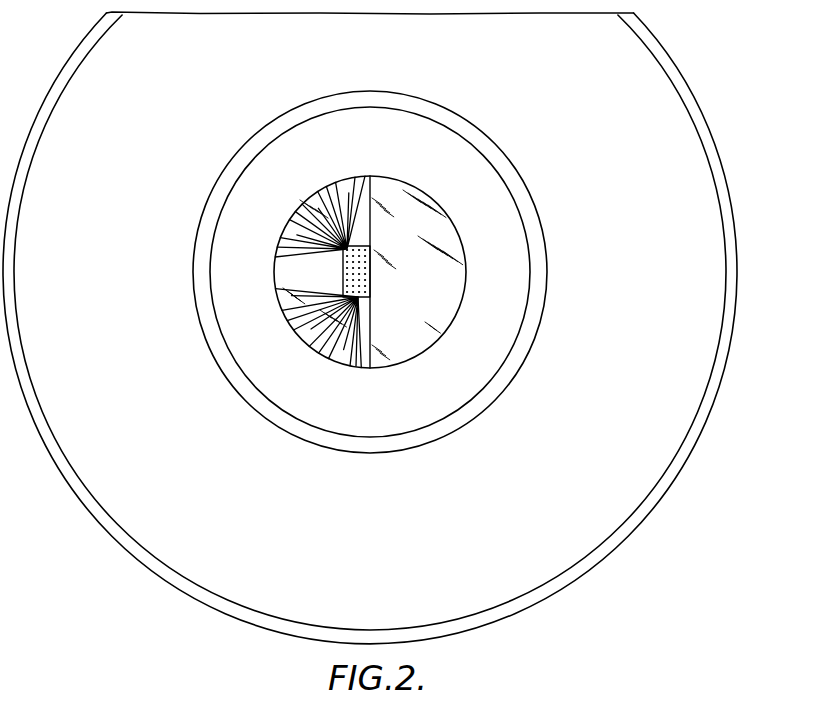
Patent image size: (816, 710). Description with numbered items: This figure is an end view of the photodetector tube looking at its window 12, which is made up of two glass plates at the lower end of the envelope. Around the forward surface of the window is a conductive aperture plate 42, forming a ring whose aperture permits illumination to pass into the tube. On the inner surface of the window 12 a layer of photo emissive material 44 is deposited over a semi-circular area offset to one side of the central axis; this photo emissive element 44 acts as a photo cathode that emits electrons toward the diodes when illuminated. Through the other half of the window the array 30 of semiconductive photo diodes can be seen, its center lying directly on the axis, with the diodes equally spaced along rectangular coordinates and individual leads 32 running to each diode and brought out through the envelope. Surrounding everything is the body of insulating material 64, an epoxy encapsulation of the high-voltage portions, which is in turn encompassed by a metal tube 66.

The window 12 is at (360, 365).
The array of semiconductive photo diodes 30 is at (372, 285).
The individual leads 32 is at (357, 181).
The aperture plate 42 is at (548, 288).
The photo emissive element 44 is at (460, 289).
The body of insulating material 64 is at (715, 295).
The metal tube 66 is at (723, 358).